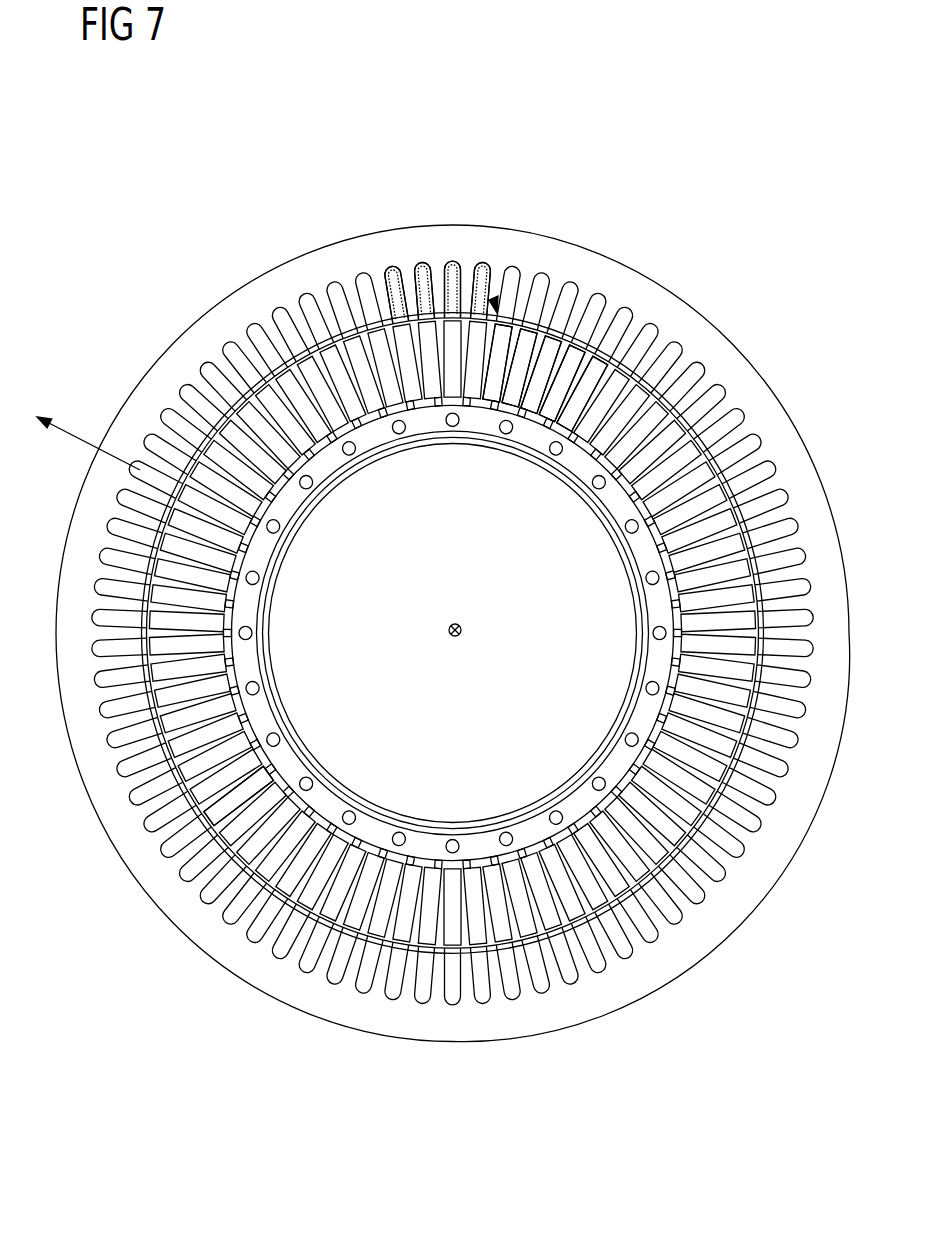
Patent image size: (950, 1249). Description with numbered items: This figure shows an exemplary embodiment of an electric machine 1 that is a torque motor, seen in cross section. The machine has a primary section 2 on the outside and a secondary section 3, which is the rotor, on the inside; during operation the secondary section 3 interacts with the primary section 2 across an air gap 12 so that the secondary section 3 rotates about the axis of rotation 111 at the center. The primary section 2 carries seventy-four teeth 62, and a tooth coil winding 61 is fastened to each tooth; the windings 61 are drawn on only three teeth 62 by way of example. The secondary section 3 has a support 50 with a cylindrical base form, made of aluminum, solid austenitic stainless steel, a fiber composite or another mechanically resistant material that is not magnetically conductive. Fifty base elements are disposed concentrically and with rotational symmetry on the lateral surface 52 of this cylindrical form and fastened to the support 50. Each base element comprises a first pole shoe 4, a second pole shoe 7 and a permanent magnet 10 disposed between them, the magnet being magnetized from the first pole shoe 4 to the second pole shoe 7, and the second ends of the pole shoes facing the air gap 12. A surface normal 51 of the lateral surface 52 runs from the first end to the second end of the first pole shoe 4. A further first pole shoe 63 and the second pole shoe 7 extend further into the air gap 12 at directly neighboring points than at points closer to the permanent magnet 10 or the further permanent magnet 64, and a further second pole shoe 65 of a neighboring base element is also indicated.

The electric machine 1 is at (632, 131).
The primary section 2 is at (232, 305).
The secondary section 3 is at (370, 960).
The first pole shoe 4 is at (503, 345).
The second pole shoe 7 is at (522, 372).
The permanent magnet 10 is at (512, 358).
The air gap 12 is at (496, 300).
The support 50 is at (244, 603).
The surface normal 51 is at (76, 432).
The lateral surface 52 is at (238, 770).
The winding 61 is at (394, 278).
The teeth 62 is at (418, 262).
The further first pole shoe 63 is at (535, 360).
The further permanent magnet 64 is at (540, 385).
The further second pole shoe 65 is at (548, 402).
The axis of rotation 111 is at (462, 628).